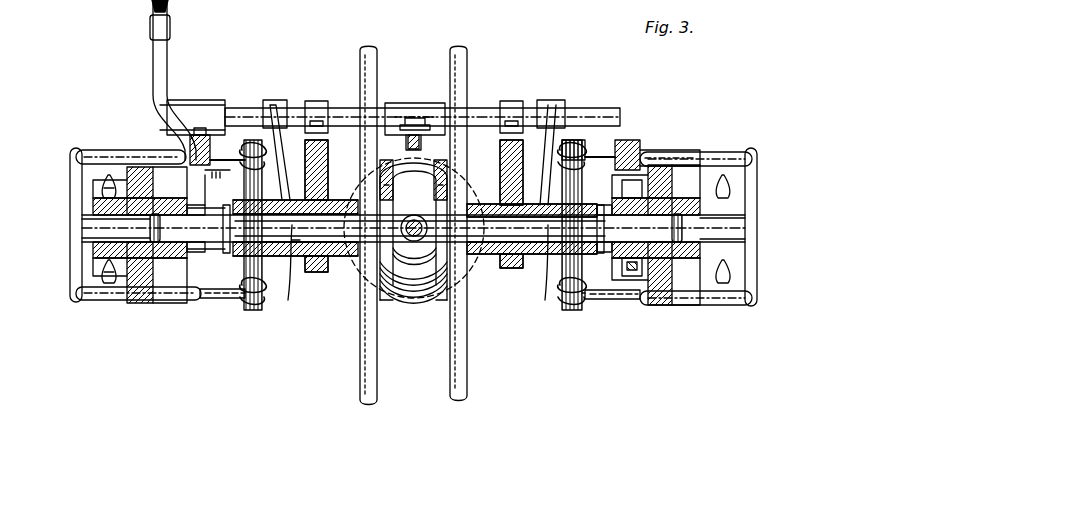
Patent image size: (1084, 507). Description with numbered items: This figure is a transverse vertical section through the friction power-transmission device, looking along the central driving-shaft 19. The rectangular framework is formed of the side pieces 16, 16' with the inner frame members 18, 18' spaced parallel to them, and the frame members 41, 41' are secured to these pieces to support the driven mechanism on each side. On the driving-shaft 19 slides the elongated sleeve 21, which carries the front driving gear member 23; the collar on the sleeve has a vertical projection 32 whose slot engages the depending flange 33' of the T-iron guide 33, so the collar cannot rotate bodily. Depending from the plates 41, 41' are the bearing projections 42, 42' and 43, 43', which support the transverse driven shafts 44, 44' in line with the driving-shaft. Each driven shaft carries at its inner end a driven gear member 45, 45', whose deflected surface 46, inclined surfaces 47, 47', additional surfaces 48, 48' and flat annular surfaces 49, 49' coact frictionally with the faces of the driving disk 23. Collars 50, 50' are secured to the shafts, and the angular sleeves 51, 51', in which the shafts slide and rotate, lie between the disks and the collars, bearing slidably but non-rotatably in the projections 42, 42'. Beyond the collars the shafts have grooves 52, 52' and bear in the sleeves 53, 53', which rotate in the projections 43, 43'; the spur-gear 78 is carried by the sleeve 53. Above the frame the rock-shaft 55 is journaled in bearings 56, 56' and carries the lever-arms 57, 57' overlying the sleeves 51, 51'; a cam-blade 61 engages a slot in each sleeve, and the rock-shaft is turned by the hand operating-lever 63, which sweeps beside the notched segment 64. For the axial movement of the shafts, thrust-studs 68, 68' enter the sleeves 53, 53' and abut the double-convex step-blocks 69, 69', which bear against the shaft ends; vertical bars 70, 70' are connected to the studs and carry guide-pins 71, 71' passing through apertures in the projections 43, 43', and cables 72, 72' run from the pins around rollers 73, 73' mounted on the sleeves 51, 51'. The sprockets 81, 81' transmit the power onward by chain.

The side piece 16 is at (621, 141).
The side piece 16' is at (217, 146).
The frame member 18 is at (497, 172).
The frame member 18' is at (333, 170).
The driving-shaft 19 is at (418, 220).
The elongated sleeve 21 is at (405, 220).
The front driving gear member 23 is at (413, 231).
The vertical projection 32 is at (417, 170).
The T-iron guide 33 is at (415, 106).
The depending flange 33' is at (428, 103).
The frame member 41 is at (670, 147).
The frame member 41' is at (212, 189).
The bearing projection 42 is at (512, 275).
The bearing projection 42' is at (315, 275).
The bearing projection 43 is at (656, 255).
The bearing projection 43' is at (140, 235).
The driven shaft 44 is at (531, 278).
The driven shaft 44' is at (295, 278).
The driven gear member 45 is at (473, 223).
The driven gear member 45' is at (352, 225).
The deflected surface 46 is at (436, 300).
The inclined surface 47 is at (435, 404).
The inclined surface 47' is at (393, 386).
The additional surface 48 is at (453, 417).
The additional surface 48' is at (382, 417).
The annular surface 49 is at (430, 355).
The annular surface 49' is at (392, 344).
The collar 50 is at (603, 239).
The collar 50' is at (232, 242).
The angular sleeve 51 is at (532, 254).
The angular sleeve 51' is at (295, 252).
The groove 52 is at (617, 242).
The groove 52' is at (206, 234).
The sleeve 53 is at (700, 228).
The sleeve 53' is at (111, 279).
The rock-shaft 55 is at (476, 110).
The bearing 56 is at (524, 103).
The bearing 56' is at (323, 99).
The lever-arm 57 is at (569, 137).
The lever-arm 57' is at (276, 132).
The cam-blade 61 is at (572, 150).
The hand operating-lever 63 is at (168, 55).
The segment 64 is at (152, 52).
The thrust-stud 68 is at (438, 228).
The thrust-stud 68' is at (91, 224).
The double-convex step-block 69 is at (691, 228).
The double-convex step-block 69' is at (131, 228).
The vertical bar 70 is at (767, 227).
The vertical bar 70' is at (55, 225).
The guide-pins 71 is at (705, 236).
The guide-pins 71' is at (138, 227).
The cable 72 is at (611, 312).
The cable 72' is at (222, 309).
The roller 73 is at (567, 245).
The roller 73' is at (253, 252).
The spur-gear 78 is at (632, 276).
The sprocket 81 is at (755, 224).
The sprocket 81' is at (82, 261).